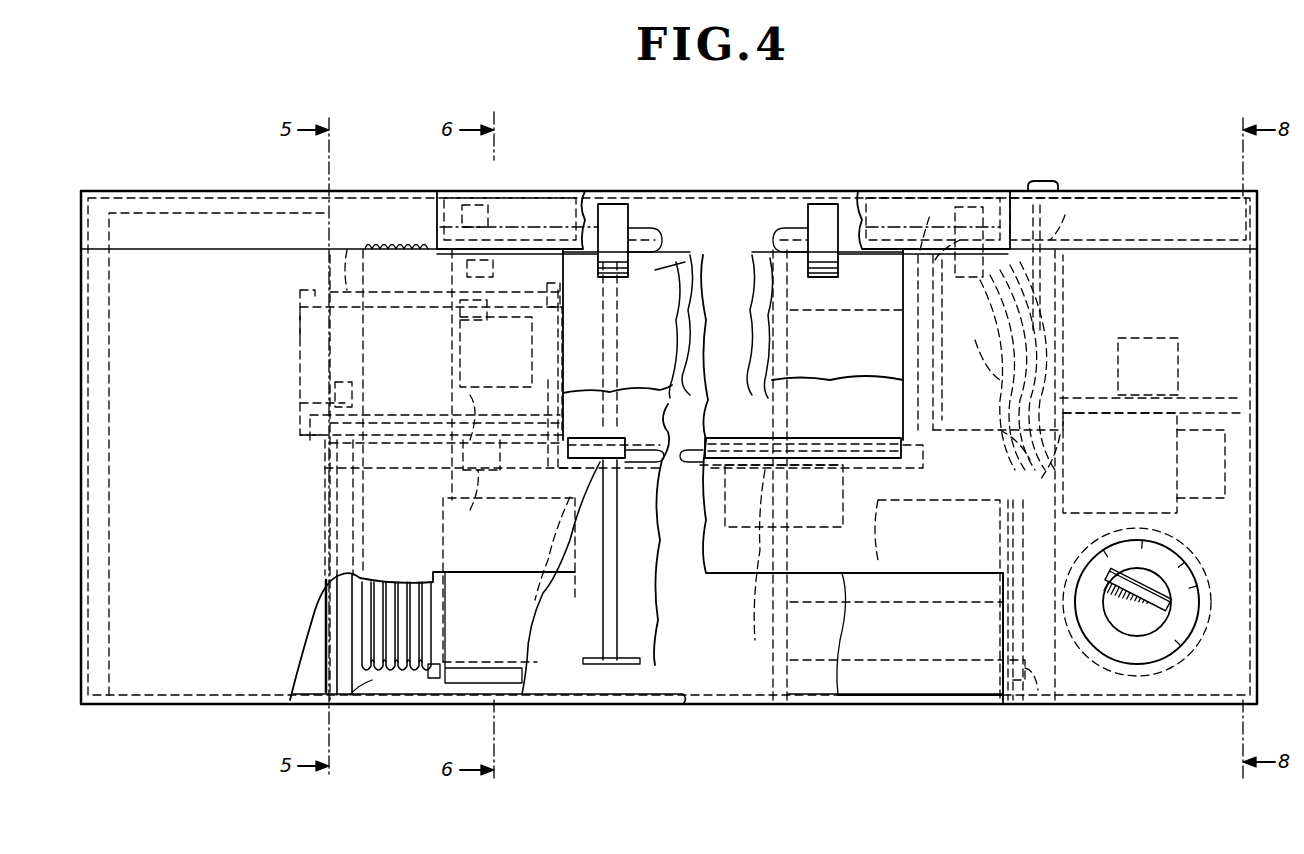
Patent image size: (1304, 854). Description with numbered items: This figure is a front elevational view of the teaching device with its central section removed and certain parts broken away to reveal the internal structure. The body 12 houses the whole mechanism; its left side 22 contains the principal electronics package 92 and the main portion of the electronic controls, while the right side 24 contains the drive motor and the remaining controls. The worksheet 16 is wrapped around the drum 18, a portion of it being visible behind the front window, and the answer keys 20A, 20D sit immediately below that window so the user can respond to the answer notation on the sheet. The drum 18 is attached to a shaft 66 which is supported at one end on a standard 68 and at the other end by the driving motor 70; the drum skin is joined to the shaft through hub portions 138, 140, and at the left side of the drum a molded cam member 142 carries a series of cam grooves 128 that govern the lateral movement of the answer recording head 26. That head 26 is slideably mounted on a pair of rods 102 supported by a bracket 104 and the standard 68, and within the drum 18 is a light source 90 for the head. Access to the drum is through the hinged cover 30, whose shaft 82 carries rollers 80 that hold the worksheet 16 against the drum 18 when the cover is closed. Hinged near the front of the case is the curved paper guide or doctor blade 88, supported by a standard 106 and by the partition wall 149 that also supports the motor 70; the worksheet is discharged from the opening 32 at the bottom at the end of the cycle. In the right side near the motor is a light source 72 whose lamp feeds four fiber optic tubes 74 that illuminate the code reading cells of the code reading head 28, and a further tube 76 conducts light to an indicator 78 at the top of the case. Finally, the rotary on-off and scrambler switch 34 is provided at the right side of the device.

The body 12 is at (130, 705).
The left side 22 is at (127, 395).
The principal electronics package 92 is at (226, 213).
The right side 24 is at (1125, 270).
The hinged cover 30 is at (543, 191).
The rollers 80 is at (478, 205).
The shaft 82 is at (640, 235).
The worksheet 16 is at (668, 252).
The drum 18 is at (750, 252).
The answer key 20A is at (608, 438).
The answer key 20D is at (797, 440).
The shaft 66 is at (690, 450).
The answer recording head 26 is at (347, 250).
The bracket 104 is at (300, 358).
The rods 102 is at (313, 292).
The light source 90 is at (478, 480).
The cam grooves 128 is at (405, 680).
The standard 68 is at (350, 680).
The cam member 142 is at (365, 685).
The standard 106 is at (435, 680).
The doctor blade 88 is at (578, 694).
The hub portion 138 is at (618, 655).
The hub portion 140 is at (760, 640).
The opening 32 is at (955, 575).
The partition wall 149 is at (1038, 690).
The driving motor 70 is at (928, 240).
The code reading head 28 is at (958, 210).
The fiber optic tubes 74 is at (1030, 340).
The tube 76 is at (1065, 215).
The indicator 78 is at (1043, 182).
The light source 72 is at (1240, 416).
The on-off and scrambler switch 34 is at (1190, 585).